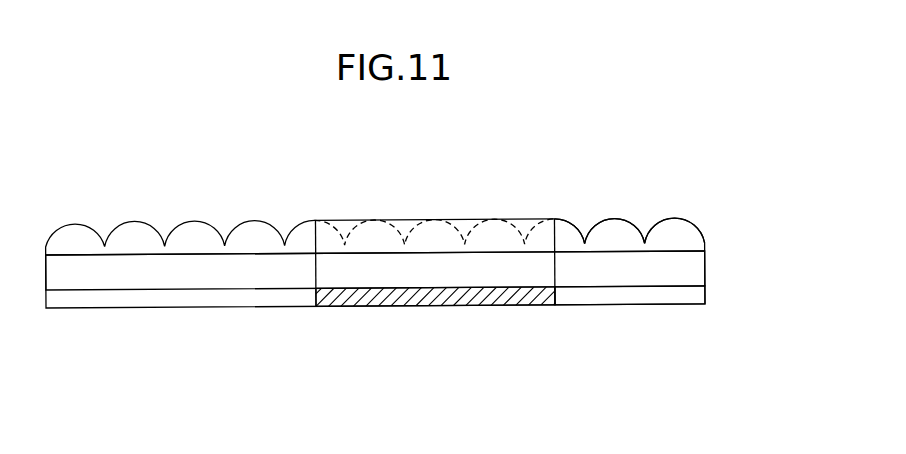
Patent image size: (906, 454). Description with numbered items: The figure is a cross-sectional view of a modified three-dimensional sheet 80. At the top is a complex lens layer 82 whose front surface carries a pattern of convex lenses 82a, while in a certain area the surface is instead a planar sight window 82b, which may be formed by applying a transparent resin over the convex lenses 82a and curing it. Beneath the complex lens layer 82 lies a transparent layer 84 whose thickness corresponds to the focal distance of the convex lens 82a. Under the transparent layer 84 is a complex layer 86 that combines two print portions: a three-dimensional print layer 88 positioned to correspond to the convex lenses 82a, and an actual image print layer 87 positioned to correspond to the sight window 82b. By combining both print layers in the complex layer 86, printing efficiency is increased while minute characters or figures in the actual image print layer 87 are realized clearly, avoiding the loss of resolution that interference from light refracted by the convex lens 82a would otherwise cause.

The 3D sheet 80 is at (411, 273).
The complex lens layer 82 is at (410, 213).
The convex lens 82a is at (692, 232).
The planar sight window 82b is at (467, 227).
The transparent layer 84 is at (700, 277).
The complex layer 86 is at (498, 345).
The actual image print layer 87 is at (480, 308).
The 3D print layer 88 is at (623, 324).